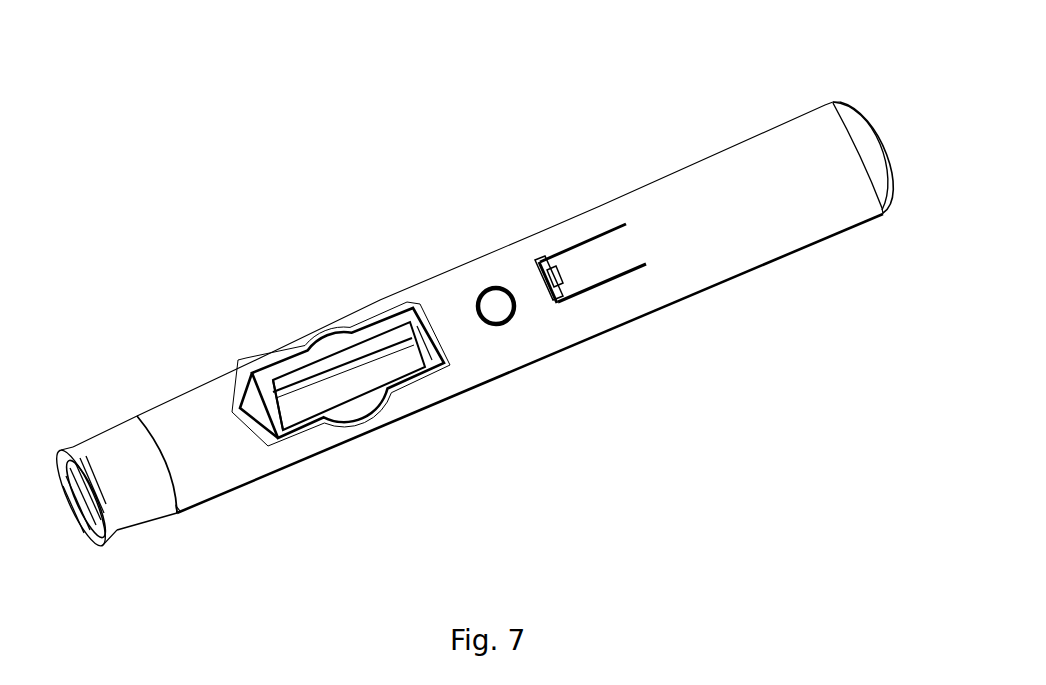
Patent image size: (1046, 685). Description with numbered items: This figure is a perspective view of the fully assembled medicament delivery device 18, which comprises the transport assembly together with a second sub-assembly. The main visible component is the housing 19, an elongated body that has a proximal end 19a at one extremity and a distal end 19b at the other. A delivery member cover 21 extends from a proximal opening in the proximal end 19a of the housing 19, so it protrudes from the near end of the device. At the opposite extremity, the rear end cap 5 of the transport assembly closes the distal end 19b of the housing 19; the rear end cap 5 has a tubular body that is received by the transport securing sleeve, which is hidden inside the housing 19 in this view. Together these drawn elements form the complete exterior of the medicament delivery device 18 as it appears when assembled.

The medicament delivery device 18 is at (219, 166).
The housing 19 is at (600, 206).
The proximal end 19a is at (137, 416).
The distal end 19b is at (825, 105).
The rear end cap 5 is at (872, 117).
The delivery member cover 21 is at (132, 523).